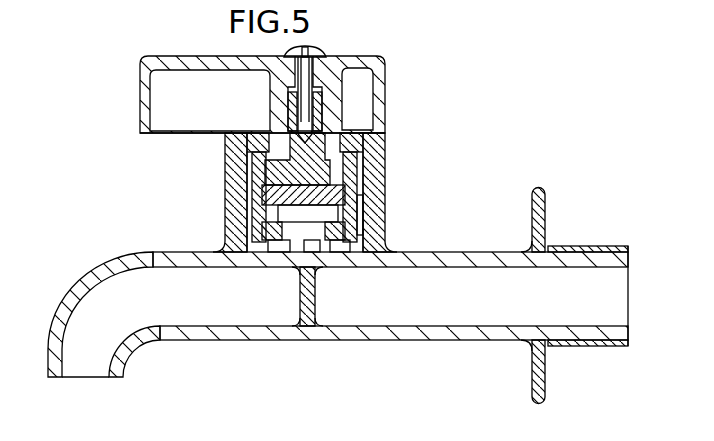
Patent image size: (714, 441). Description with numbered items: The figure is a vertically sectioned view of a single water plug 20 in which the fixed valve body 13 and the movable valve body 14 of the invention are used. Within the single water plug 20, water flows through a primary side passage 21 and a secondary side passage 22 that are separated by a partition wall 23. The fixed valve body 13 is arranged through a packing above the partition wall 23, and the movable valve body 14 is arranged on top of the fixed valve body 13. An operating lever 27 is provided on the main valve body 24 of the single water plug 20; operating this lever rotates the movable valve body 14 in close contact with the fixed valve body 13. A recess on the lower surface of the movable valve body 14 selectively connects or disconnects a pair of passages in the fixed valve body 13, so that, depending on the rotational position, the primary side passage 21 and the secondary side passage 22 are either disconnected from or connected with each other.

The fixed valve body 13 is at (350, 230).
The movable valve body 14 is at (295, 183).
The single water plug 20 is at (388, 88).
The primary side passage 21 is at (584, 324).
The secondary side passage 22 is at (173, 318).
The partition wall 23 is at (316, 293).
The main valve body 24 is at (385, 238).
The operating lever 27 is at (176, 58).